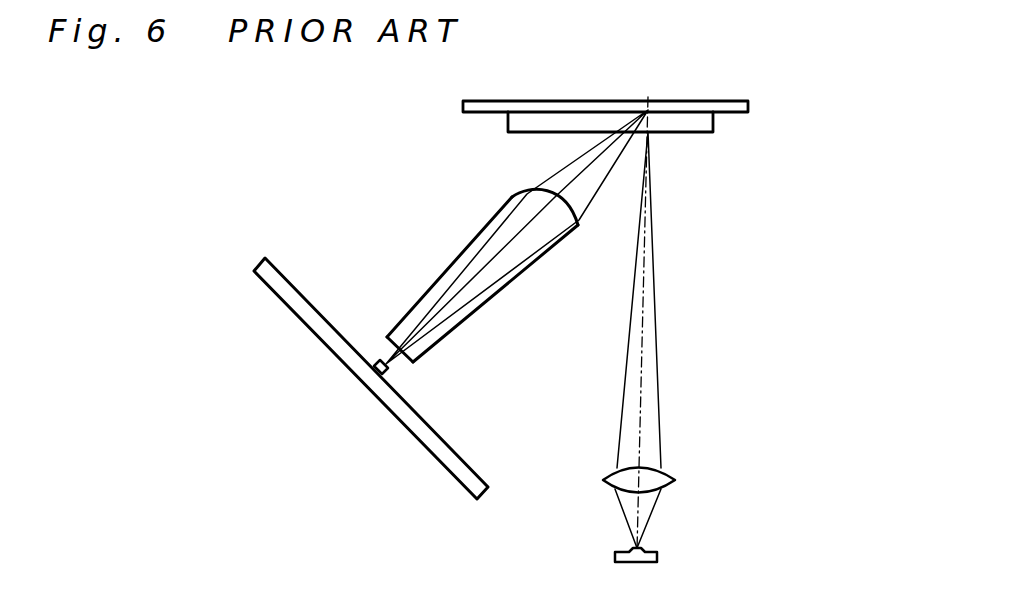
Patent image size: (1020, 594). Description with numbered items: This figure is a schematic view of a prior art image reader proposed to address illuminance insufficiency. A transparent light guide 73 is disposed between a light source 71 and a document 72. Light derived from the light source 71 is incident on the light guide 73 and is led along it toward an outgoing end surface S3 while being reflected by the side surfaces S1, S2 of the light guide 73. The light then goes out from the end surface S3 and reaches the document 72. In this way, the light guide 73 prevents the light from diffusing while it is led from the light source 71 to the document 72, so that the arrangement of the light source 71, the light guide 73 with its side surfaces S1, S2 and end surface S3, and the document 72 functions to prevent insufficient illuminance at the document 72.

The light source 71 is at (262, 285).
The document 72 is at (738, 102).
The transparent light guide 73 is at (483, 261).
The side surface S1 is at (460, 253).
The side surface S2 is at (527, 268).
The outgoing end surface S3 is at (583, 193).